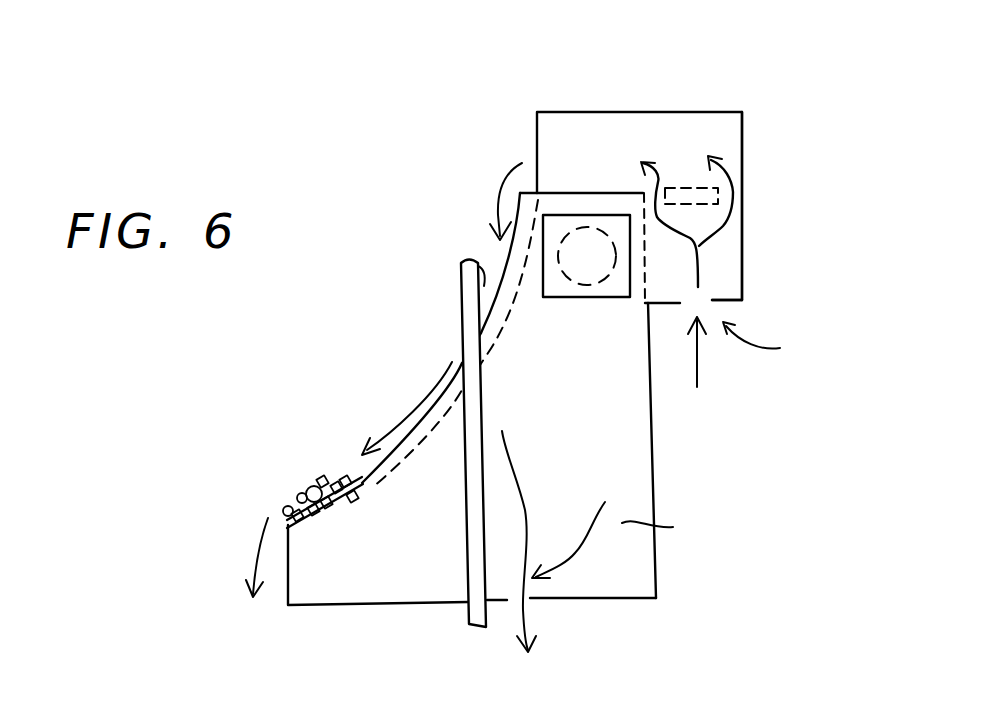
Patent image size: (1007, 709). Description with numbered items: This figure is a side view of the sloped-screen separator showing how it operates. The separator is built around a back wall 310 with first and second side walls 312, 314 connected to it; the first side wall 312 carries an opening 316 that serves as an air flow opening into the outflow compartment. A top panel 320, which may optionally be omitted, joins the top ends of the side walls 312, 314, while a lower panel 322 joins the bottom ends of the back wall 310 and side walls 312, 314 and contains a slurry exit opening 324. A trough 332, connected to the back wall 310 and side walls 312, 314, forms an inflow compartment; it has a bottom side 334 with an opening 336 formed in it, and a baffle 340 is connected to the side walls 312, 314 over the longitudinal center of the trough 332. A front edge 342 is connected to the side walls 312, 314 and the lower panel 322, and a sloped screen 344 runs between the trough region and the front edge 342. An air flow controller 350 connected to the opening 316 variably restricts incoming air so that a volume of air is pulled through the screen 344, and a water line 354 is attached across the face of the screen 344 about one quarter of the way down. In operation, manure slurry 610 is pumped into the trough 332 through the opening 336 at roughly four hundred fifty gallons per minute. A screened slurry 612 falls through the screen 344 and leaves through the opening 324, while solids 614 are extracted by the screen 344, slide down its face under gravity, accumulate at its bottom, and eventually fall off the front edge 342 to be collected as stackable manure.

The back wall 310 is at (652, 436).
The first side wall 312 is at (695, 527).
The second side wall 314 is at (595, 190).
The opening 316 is at (593, 265).
The top panel 320 is at (637, 110).
The lower panel 322 is at (582, 598).
The opening 324 is at (587, 509).
The trough 332 is at (745, 238).
The bottom side 334 is at (732, 302).
The opening 336 is at (789, 347).
The baffle 340 is at (712, 190).
The front edge 342 is at (290, 587).
The sloped screen 344 is at (353, 478).
The air flow controller 350 is at (557, 297).
The water line 354 is at (468, 482).
The manure slurry 610 is at (573, 158).
The screened slurry 612 is at (508, 455).
The solids 614 is at (300, 482).